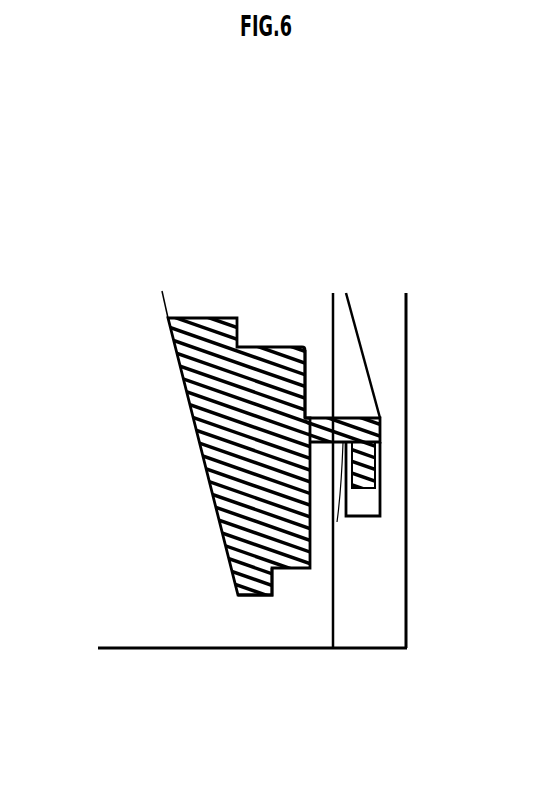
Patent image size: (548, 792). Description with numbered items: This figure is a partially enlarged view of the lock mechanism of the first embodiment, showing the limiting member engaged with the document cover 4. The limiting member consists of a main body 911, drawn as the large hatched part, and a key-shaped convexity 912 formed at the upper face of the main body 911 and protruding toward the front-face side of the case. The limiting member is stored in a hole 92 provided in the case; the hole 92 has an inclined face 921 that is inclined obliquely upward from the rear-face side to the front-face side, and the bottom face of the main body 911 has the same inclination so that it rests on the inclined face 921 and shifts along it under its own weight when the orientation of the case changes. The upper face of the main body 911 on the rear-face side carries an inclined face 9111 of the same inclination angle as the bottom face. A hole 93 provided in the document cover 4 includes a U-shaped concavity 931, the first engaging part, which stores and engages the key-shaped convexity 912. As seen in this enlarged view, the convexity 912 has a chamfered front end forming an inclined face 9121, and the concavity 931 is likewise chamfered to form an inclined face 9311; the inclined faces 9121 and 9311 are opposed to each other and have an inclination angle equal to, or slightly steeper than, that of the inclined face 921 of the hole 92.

The document cover 4 is at (383, 630).
The hole 92 is at (258, 429).
The main body 911 is at (197, 318).
The inclined face 9111 is at (305, 370).
The convexity 912 is at (381, 438).
The inclined face 9121 is at (360, 462).
The inclined face 921 is at (233, 571).
The hole 93 is at (341, 341).
The U-shaped concavity 931 is at (362, 498).
The inclined face 9311 is at (341, 470).